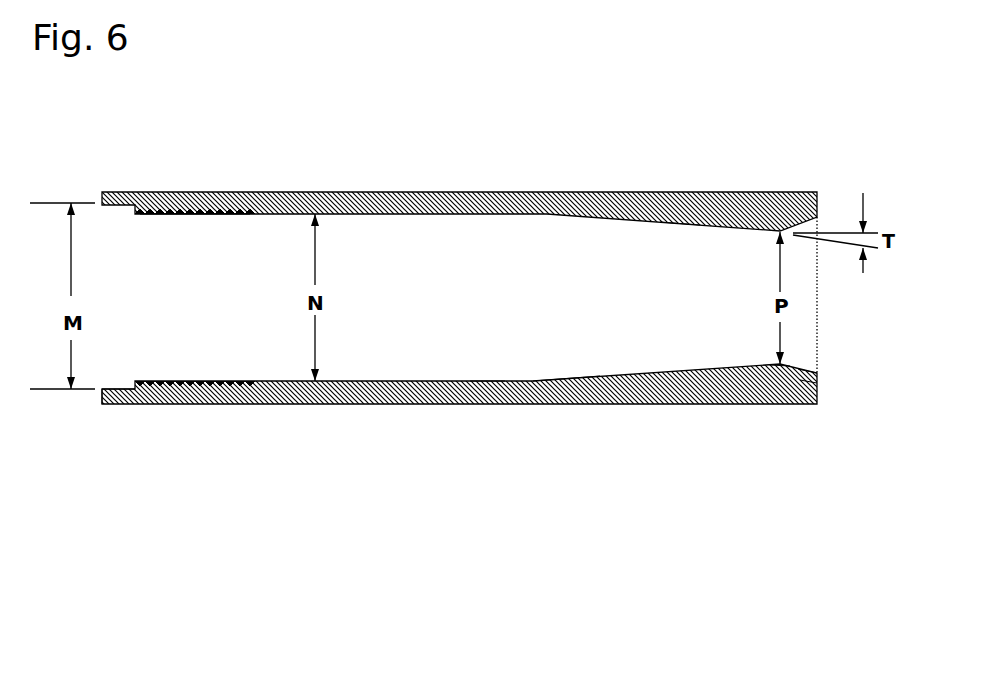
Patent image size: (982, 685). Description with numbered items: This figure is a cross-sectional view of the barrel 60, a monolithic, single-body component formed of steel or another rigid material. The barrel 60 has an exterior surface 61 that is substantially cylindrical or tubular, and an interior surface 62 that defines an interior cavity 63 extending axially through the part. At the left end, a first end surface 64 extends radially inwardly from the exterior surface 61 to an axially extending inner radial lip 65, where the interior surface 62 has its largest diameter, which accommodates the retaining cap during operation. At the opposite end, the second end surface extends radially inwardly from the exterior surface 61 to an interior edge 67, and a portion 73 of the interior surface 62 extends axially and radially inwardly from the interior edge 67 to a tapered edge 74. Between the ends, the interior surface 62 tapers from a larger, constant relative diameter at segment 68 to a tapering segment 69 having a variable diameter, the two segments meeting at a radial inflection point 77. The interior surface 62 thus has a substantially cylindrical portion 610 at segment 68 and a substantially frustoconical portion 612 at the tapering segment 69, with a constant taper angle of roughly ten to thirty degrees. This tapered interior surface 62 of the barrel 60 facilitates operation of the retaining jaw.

The barrel 60 is at (158, 605).
The exterior surface 61 is at (435, 404).
The interior surface 62 is at (450, 214).
The interior cavity 63 is at (182, 287).
The first end surface 64 is at (101, 391).
The inner radial lip 65 is at (119, 391).
The interior edge 67 is at (199, 213).
The segment 68 is at (487, 378).
The tapering segment 69 is at (680, 222).
The portion of the interior surface 73 is at (807, 373).
The tapered edge 74 is at (780, 366).
The radial inflection point 77 is at (530, 382).
The substantially cylindrical portion 610 is at (481, 258).
The substantially frustoconical portion 612 is at (718, 268).